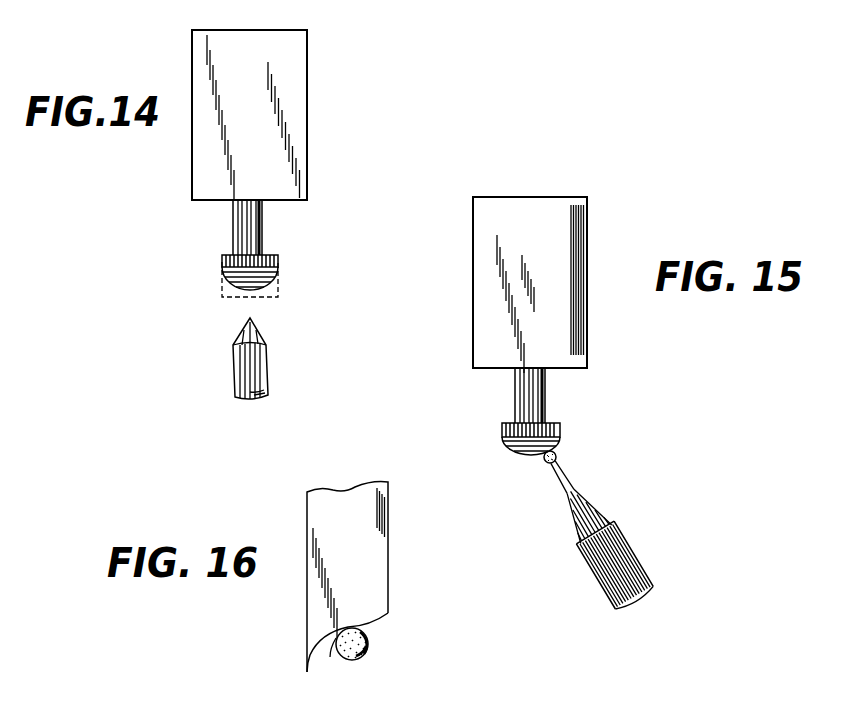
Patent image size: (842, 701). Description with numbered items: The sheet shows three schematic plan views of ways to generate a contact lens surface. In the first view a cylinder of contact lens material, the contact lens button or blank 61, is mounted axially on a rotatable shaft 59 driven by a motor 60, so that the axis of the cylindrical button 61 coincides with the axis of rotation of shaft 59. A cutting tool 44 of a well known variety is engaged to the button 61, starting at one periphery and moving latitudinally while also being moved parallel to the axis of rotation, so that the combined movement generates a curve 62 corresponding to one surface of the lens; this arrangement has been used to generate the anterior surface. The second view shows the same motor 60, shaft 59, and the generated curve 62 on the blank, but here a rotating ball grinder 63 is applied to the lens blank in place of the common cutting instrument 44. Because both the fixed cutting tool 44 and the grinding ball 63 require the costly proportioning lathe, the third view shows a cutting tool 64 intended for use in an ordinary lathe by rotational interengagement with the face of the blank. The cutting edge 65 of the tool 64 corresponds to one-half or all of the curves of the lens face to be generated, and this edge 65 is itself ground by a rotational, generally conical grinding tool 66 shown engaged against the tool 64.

In FIG. 14, the cutting tool 44 is at (267, 358).
In FIG. 14, the rotatable shaft 59 is at (262, 240).
In FIG. 15, the rotatable shaft 59 is at (523, 405).
In FIG. 14, the motor 60 is at (297, 63).
In FIG. 15, the motor 60 is at (482, 277).
In FIG. 14, the contact lens button 61 is at (278, 285).
In FIG. 14, the curve 62 is at (225, 280).
In FIG. 15, the curve 62 is at (540, 450).
In FIG. 15, the rotating ball grinder 63 is at (578, 466).
In FIG. 16, the cutting tool 64 is at (378, 550).
In FIG. 16, the cutting edge 65 is at (347, 649).
In FIG. 16, the conical grinding tool 66 is at (368, 657).